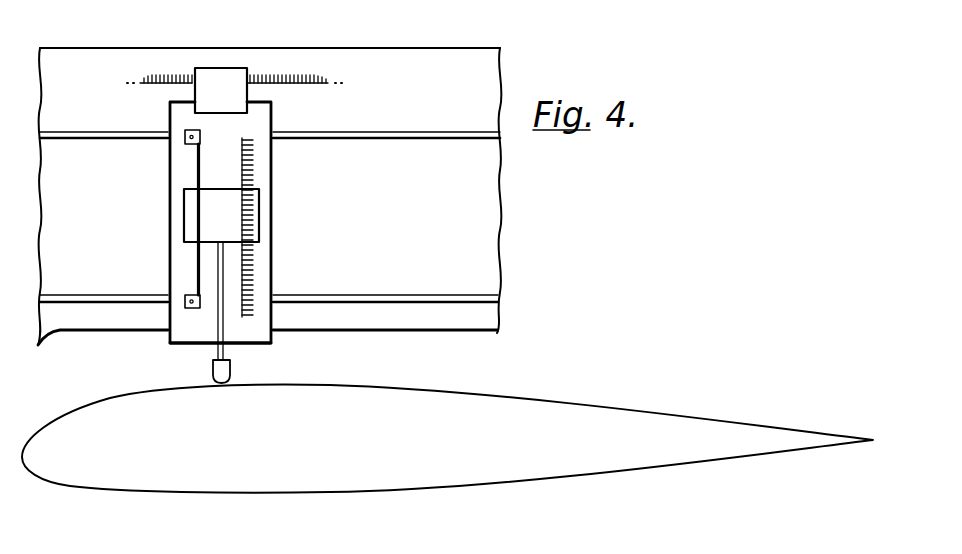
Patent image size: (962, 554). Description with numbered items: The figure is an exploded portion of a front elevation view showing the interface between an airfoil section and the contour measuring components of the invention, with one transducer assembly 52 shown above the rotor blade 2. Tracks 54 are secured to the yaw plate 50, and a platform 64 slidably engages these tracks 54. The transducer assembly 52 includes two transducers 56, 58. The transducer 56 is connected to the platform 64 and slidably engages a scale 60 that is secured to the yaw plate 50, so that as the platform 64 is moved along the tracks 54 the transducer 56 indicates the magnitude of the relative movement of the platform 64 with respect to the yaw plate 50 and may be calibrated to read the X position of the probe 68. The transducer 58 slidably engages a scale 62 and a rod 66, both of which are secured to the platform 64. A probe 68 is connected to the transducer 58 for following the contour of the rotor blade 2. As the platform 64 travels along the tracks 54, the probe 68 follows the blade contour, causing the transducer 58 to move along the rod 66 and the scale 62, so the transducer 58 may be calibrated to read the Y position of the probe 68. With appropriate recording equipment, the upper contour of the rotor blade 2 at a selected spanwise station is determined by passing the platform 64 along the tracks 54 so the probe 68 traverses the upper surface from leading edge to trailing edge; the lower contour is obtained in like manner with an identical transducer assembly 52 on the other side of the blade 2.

The rotor blade 2 is at (370, 467).
The yaw plate 50 is at (490, 200).
The transducer assembly 52 is at (273, 190).
The tracks 54 is at (425, 131).
The transducer 56 is at (217, 78).
The transducer 58 is at (193, 210).
The scale 60 is at (303, 85).
The scale 62 is at (254, 262).
The platform 64 is at (255, 332).
The rod 66 is at (196, 270).
The probe 68 is at (212, 372).